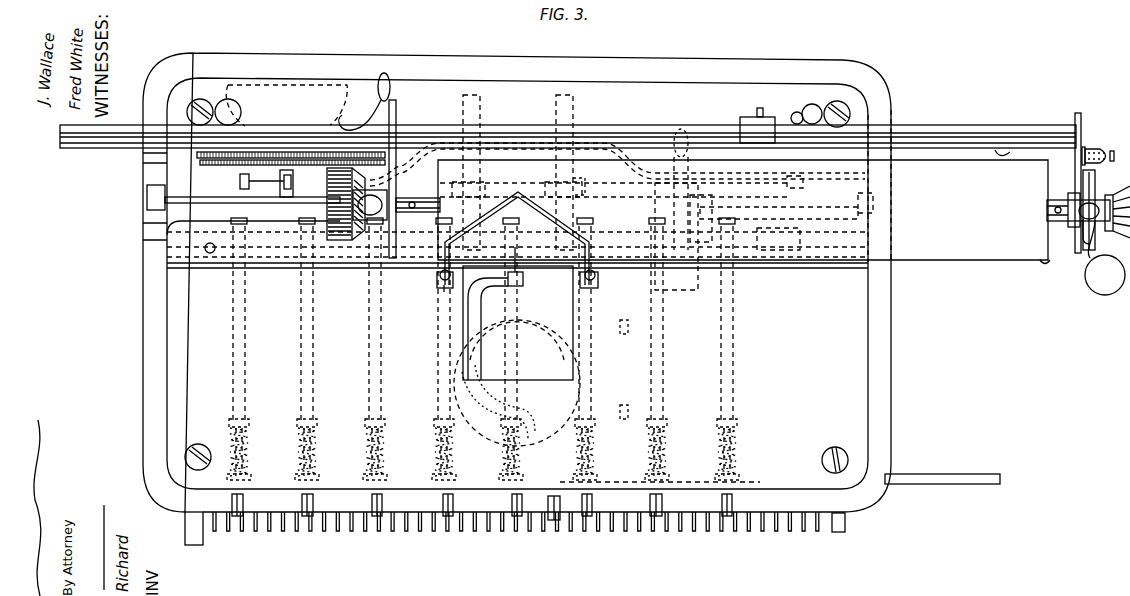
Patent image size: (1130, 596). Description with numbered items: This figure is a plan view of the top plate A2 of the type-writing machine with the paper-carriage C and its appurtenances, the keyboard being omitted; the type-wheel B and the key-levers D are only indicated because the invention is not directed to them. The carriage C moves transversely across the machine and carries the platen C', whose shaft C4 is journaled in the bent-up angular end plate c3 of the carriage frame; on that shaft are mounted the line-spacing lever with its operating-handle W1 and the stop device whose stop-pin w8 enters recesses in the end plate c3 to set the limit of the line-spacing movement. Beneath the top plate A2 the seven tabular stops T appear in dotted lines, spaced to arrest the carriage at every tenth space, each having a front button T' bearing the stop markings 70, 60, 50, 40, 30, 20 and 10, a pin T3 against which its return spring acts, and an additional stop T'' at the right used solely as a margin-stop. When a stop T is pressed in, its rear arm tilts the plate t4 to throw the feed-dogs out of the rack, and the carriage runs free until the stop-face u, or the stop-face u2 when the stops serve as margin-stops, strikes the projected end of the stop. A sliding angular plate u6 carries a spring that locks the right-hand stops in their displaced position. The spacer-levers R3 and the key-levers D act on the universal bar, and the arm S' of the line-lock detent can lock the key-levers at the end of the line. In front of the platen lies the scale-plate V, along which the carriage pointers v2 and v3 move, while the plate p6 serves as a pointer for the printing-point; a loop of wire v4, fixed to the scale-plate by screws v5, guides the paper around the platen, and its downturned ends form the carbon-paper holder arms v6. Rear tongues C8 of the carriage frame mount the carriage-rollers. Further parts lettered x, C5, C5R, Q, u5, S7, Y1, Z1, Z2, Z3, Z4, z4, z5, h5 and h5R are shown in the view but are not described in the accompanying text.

The top plate A2 is at (517, 282).
The paper-carriage C is at (568, 130).
The rail groove x is at (1003, 157).
The platen C' is at (743, 210).
The pointer v3 is at (1026, 276).
The end portion of carriage frame c3 is at (1076, 116).
The stop-pin w8 is at (1105, 142).
The shaft C4 is at (1066, 187).
The feed shaft collar C5R is at (1075, 245).
The operating-handle W1 is at (1107, 240).
The eyelet z5 is at (797, 112).
The lever pivot Z2 is at (797, 106).
The screw h5R is at (835, 108).
The stop block z4 is at (754, 114).
The lever link Z3 is at (662, 132).
The screw h5 is at (232, 110).
The lever Z1 is at (288, 120).
The release lever Y1 is at (367, 165).
The lever arm Z4 is at (386, 93).
The plate t4 is at (180, 204).
The rod u5 is at (252, 186).
The eyebolt Q is at (225, 168).
The projecting tongues C8 is at (370, 204).
The gear hub C5 is at (355, 245).
The spacing bar S7 is at (700, 208).
The pin T3 is at (578, 185).
The scale-plate V is at (262, 270).
The stop-face u is at (688, 222).
The stop-face u2 is at (815, 213).
The paper-guide v4 is at (584, 238).
The pointer v2 is at (432, 278).
The vertical arms v6 is at (446, 290).
The screws v5 is at (599, 283).
The plate p6 is at (535, 285).
The type-wheel B is at (515, 340).
The tabular stops T is at (493, 350).
The angular plate u6 is at (918, 478).
The key-levers D is at (380, 531).
The spacer-levers R3 is at (205, 553).
The stop marking 70 is at (249, 505).
The stop marking 60 is at (319, 505).
The stop marking 50 is at (388, 505).
The stop marking 40 is at (459, 505).
The stop marking 30 is at (527, 505).
The stop marking 20 is at (597, 505).
The stop marking 10 is at (666, 505).
The additional stop T'' is at (740, 505).
The detent arm S' is at (542, 541).
The handle or button T' is at (458, 555).